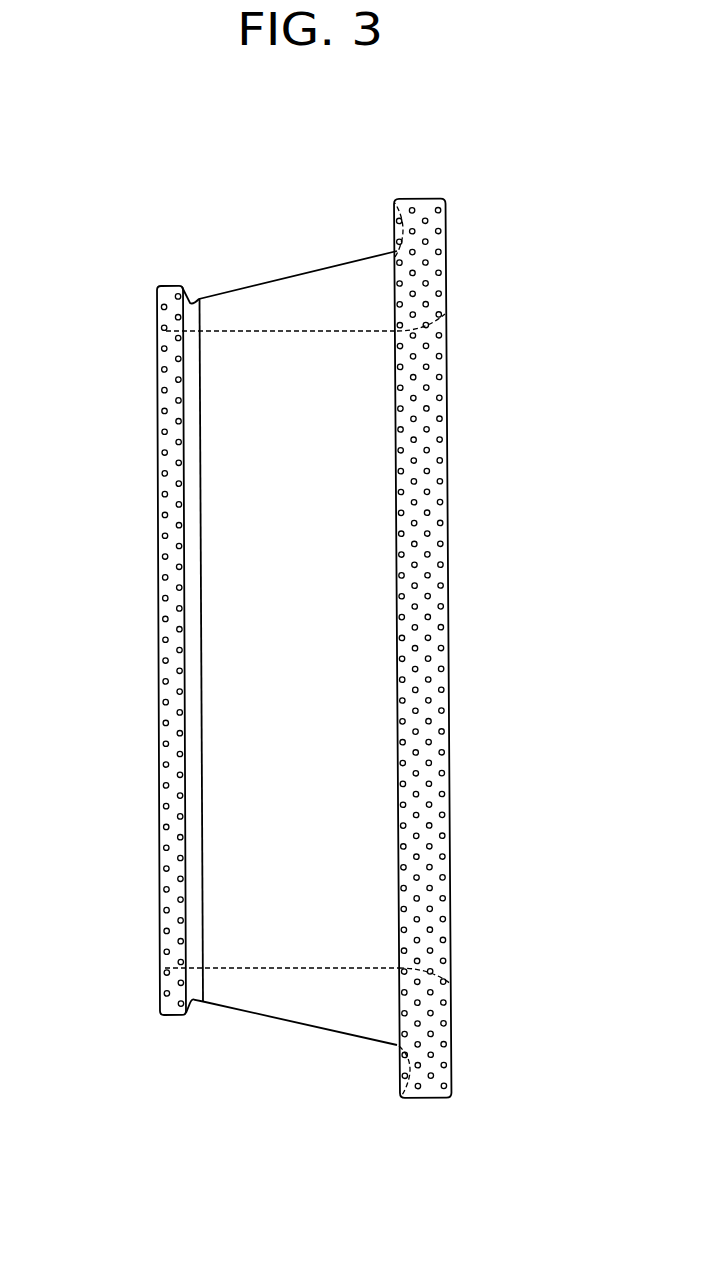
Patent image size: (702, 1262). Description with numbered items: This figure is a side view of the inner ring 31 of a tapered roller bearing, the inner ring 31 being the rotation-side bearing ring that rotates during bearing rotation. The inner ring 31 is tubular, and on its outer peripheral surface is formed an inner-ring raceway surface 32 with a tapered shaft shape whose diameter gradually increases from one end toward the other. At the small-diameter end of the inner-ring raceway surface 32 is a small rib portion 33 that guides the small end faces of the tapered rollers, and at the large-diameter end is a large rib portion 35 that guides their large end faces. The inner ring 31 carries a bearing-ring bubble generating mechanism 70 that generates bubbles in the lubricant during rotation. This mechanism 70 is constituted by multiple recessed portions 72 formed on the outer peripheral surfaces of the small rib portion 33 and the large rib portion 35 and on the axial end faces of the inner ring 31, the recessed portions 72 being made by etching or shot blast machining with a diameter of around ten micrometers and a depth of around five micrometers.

The inner ring 31 is at (464, 261).
The inner-ring raceway surface 32 is at (283, 278).
The small rib portion 33 is at (172, 287).
The large rib portion 35 is at (416, 199).
The bearing-ring bubble generating mechanism 70 is at (451, 385).
The recessed portions 72 is at (161, 577).